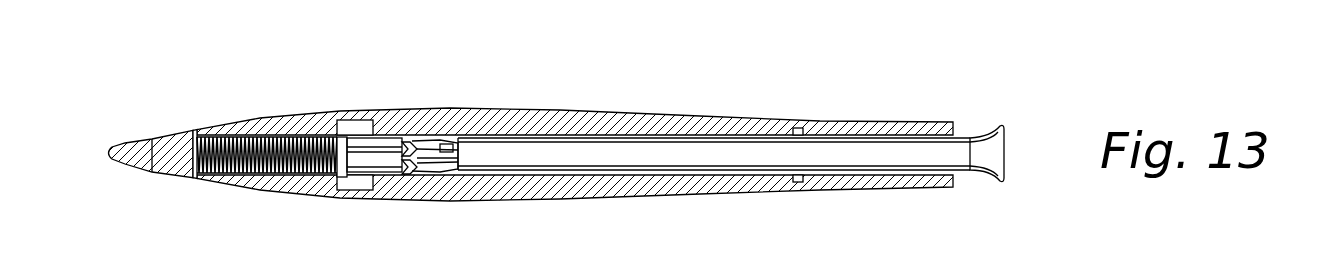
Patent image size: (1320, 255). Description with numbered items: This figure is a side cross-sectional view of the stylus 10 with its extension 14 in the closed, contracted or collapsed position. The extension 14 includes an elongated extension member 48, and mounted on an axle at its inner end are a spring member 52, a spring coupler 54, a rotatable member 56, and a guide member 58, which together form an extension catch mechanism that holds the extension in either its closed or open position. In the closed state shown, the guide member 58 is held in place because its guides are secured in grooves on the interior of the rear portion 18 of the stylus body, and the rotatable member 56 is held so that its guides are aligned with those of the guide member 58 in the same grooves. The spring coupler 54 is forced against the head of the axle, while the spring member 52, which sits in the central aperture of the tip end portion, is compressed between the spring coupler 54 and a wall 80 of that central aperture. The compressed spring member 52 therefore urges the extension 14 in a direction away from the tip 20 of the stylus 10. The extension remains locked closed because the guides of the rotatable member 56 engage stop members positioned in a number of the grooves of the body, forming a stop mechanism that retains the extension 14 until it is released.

The stylus 10 is at (784, 32).
The extension 14 is at (976, 117).
The rear portion 18 is at (652, 120).
The tip 20 is at (122, 148).
The extension member 48 is at (825, 148).
The spring member 52 is at (268, 143).
The spring coupler 54 is at (340, 140).
The rotatable member 56 is at (378, 131).
The guide member 58 is at (451, 131).
The wall 80 is at (192, 153).